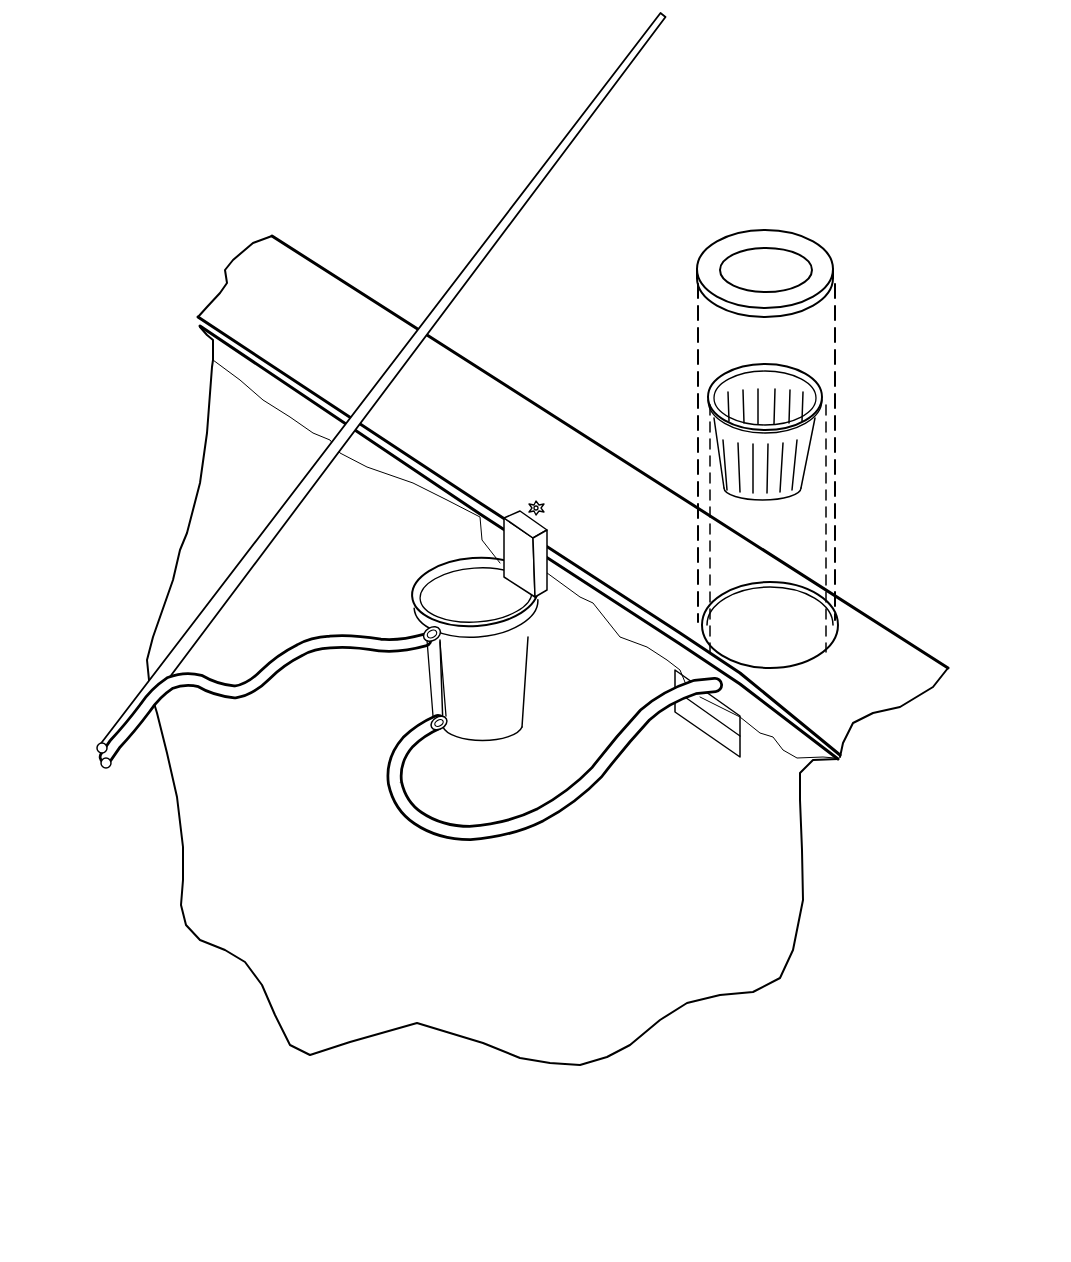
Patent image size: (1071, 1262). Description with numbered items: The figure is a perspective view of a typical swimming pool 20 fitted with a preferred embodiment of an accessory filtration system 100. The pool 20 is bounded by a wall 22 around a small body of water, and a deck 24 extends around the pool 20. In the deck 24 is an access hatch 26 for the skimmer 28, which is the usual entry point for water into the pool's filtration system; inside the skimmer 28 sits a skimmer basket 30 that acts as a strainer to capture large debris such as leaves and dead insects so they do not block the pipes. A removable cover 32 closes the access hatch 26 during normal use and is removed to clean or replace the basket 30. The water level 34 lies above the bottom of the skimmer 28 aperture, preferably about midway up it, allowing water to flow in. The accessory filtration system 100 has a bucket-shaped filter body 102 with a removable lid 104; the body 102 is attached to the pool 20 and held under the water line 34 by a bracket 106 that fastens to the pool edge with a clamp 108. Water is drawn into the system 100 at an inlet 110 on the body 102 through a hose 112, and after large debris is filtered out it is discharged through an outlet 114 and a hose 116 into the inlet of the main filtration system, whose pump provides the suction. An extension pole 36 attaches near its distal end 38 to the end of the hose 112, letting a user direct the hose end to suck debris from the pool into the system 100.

The swimming pool 20 is at (130, 135).
The wall 22 is at (610, 1027).
The deck 24 is at (272, 263).
The access hatch 26 is at (783, 617).
The skimmer 28 is at (717, 724).
The skimmer basket 30 is at (773, 380).
The removable cover 32 is at (768, 238).
The water level 34 is at (243, 380).
The extension pole 36 is at (598, 110).
The distal end 38 is at (113, 715).
The accessory filtration system 100 is at (420, 555).
The filter body 102 is at (515, 673).
The removable lid 104 is at (507, 595).
The bracket 106 is at (505, 518).
The clamp 108 is at (549, 507).
The inlet 110 is at (420, 628).
The hose 112 is at (130, 740).
The outlet 114 is at (430, 723).
The hose 116 is at (490, 840).